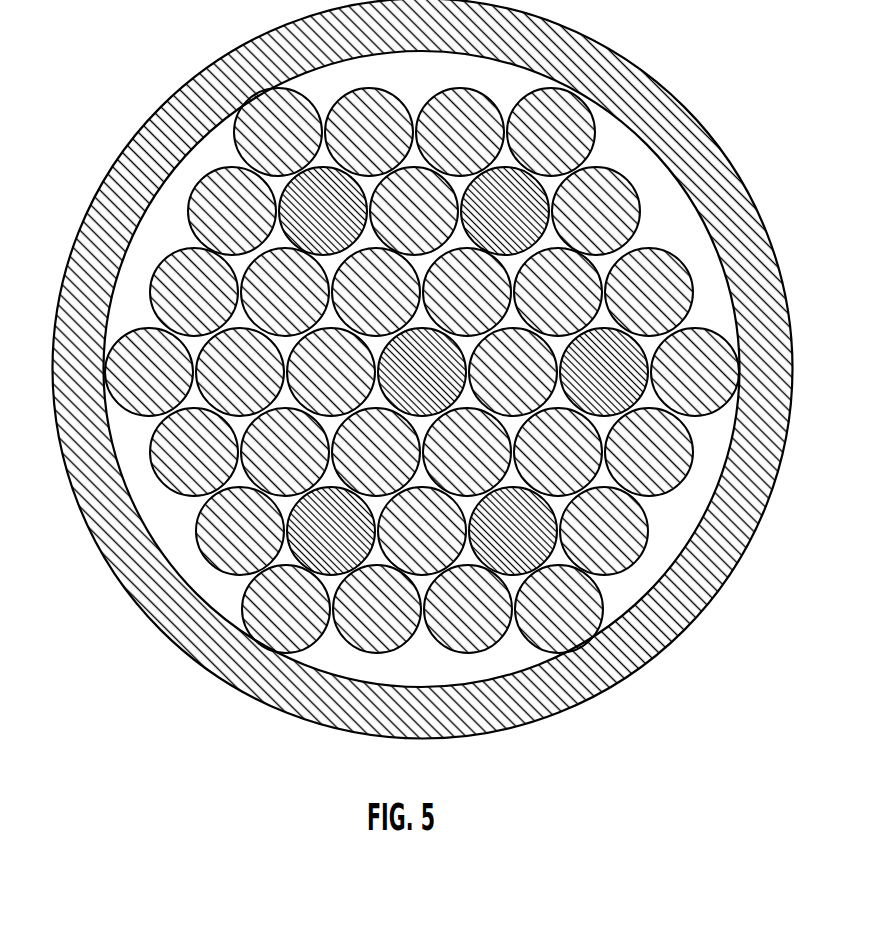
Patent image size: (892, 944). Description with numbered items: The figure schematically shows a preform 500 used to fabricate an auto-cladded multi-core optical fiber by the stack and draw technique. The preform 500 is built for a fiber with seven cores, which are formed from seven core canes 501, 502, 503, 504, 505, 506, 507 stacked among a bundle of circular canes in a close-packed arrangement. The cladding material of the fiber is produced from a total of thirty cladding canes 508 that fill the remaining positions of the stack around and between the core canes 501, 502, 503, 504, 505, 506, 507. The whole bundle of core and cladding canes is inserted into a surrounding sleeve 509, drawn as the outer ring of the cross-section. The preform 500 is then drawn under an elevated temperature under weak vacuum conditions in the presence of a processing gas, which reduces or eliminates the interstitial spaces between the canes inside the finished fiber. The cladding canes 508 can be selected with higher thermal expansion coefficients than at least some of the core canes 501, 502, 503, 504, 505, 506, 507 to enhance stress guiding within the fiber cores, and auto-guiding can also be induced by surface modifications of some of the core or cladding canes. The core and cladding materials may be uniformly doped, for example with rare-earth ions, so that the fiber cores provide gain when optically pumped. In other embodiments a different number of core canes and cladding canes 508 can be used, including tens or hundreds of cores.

The preform 500 is at (641, 717).
The core cane 501 is at (413, 373).
The core cane 502 is at (323, 213).
The core cane 503 is at (510, 200).
The core cane 504 is at (603, 372).
The core cane 505 is at (617, 507).
The core cane 506 is at (328, 528).
The core cane 507 is at (243, 375).
The cladding cane 508 is at (565, 605).
The sleeve 509 is at (417, 718).